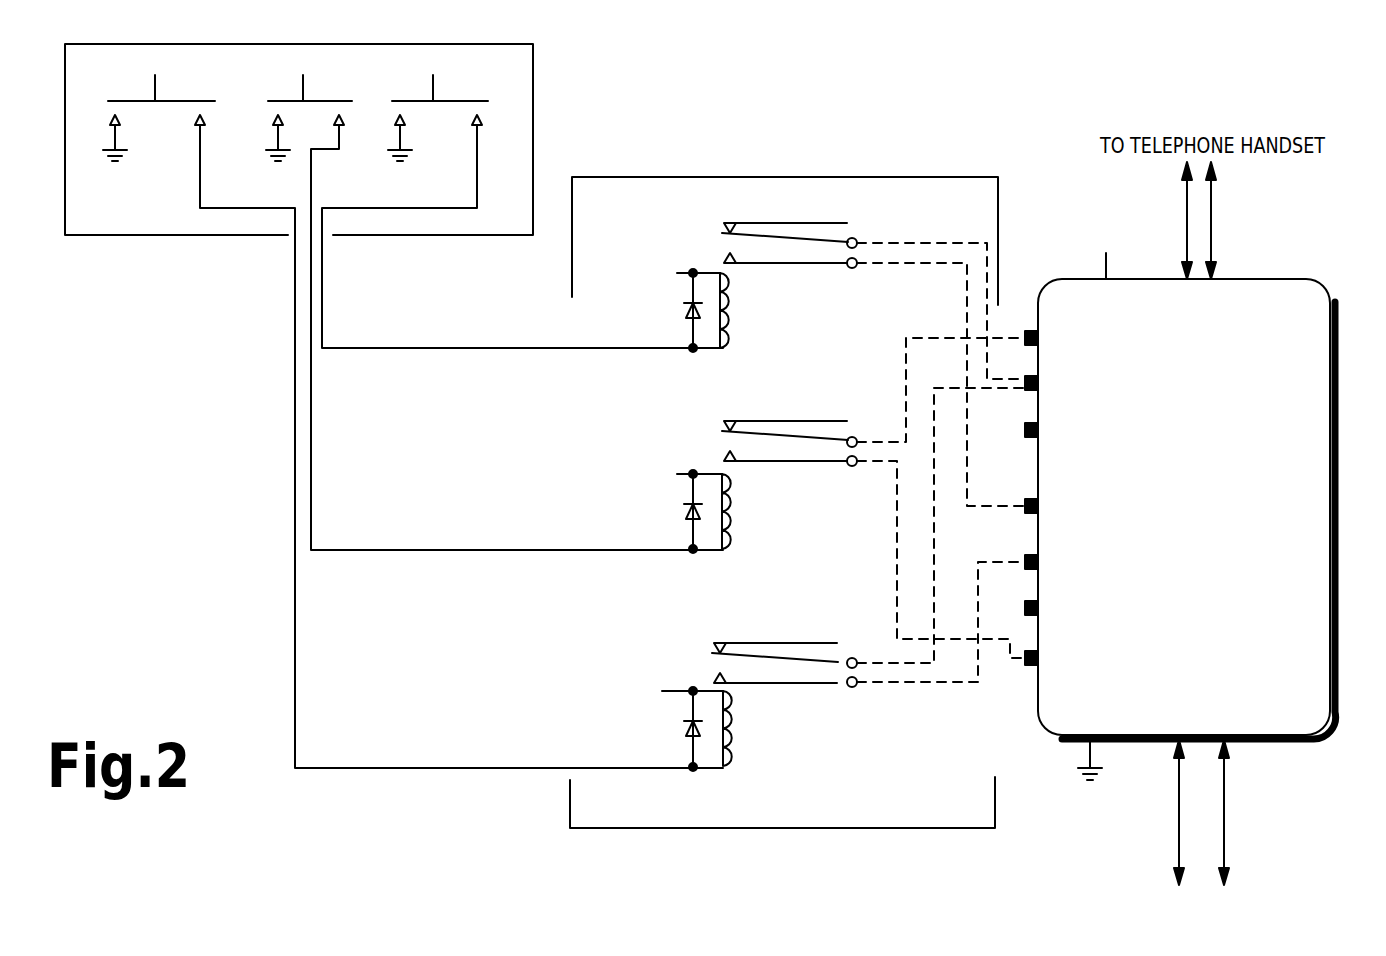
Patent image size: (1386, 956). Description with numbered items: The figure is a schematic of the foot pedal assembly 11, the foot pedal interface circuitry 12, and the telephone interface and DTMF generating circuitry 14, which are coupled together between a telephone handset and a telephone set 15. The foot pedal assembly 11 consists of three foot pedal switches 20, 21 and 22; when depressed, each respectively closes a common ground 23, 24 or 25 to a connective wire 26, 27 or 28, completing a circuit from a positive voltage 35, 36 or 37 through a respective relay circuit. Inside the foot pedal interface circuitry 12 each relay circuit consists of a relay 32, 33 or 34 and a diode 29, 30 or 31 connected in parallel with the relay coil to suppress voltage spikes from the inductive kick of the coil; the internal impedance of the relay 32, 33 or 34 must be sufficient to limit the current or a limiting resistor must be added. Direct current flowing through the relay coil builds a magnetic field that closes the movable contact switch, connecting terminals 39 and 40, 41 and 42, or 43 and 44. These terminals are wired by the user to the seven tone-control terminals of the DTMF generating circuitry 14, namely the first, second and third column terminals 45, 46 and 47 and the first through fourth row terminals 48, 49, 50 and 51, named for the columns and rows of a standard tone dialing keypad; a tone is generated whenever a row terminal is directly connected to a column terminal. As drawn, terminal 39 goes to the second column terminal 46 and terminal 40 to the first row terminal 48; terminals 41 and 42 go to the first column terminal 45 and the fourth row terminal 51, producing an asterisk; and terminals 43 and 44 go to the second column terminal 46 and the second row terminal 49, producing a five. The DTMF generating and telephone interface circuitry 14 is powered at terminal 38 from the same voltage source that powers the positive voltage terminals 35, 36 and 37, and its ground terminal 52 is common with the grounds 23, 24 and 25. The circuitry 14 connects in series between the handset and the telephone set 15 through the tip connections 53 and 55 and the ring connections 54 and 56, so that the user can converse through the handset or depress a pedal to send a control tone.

The foot pedal assembly 11 is at (533, 58).
The foot pedal interface circuitry 12 is at (908, 177).
The telephone interface and DTMF generating circuitry 14 is at (1283, 279).
The telephone set 15 is at (1128, 906).
The foot pedal switch 20 is at (162, 84).
The foot pedal switch 21 is at (310, 84).
The foot pedal switch 22 is at (440, 84).
The common ground 23 is at (118, 140).
The common ground 24 is at (281, 140).
The common ground 25 is at (403, 140).
The connective wire 26 is at (202, 140).
The connective wire 27 is at (341, 140).
The connective wire 28 is at (479, 140).
The diode 29 is at (678, 310).
The diode 30 is at (683, 507).
The diode 31 is at (683, 724).
The relay 32 is at (738, 316).
The relay 33 is at (740, 522).
The relay 34 is at (740, 733).
The positive voltage 35 is at (655, 258).
The positive voltage 36 is at (666, 462).
The positive voltage 37 is at (654, 680).
The power terminal 38 is at (1106, 215).
The relay contact terminal 39 is at (914, 230).
The relay contact terminal 40 is at (906, 263).
The relay contact terminal 41 is at (889, 440).
The relay contact terminal 42 is at (886, 468).
The relay contact terminal 43 is at (891, 660).
The relay contact terminal 44 is at (900, 686).
The column terminal C1 45 is at (1065, 341).
The column terminal C2 46 is at (1065, 386).
The column terminal C3 47 is at (1065, 433).
The row terminal R1 48 is at (1065, 508).
The row terminal R2 49 is at (1065, 565).
The row terminal R3 50 is at (1065, 611).
The row terminal R4 51 is at (1065, 661).
The ground terminal 52 is at (1104, 718).
The tip connection 53 is at (1185, 212).
The ring connection 54 is at (1213, 212).
The tip connection 55 is at (1178, 815).
The ring connection 56 is at (1226, 815).